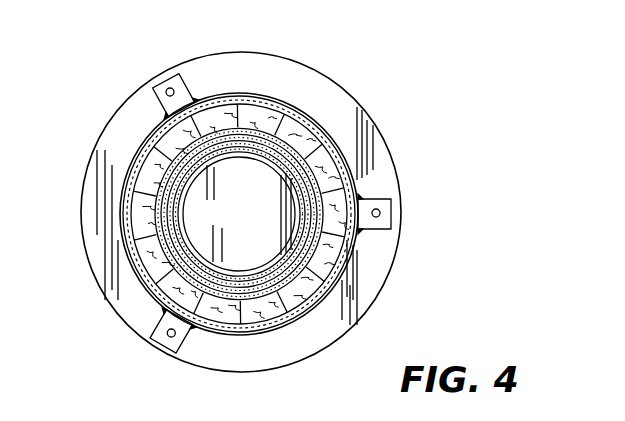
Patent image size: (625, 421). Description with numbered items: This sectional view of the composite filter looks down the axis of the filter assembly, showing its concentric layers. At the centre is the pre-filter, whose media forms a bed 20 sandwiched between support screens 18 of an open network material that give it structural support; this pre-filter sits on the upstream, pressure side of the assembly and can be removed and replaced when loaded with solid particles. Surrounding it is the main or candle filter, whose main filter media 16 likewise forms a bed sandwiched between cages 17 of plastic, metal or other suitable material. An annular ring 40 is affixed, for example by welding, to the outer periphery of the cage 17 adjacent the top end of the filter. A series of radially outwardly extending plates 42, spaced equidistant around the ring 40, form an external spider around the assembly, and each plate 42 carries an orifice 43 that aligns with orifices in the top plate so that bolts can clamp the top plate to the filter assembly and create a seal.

The annular ring 40 is at (318, 120).
The radially outwardly extending plates 42 is at (160, 92).
The orifices 43 is at (170, 88).
The cages 17 is at (337, 155).
The main filter media 16 is at (328, 257).
The support screens 18 is at (283, 177).
The bed 20 is at (252, 275).